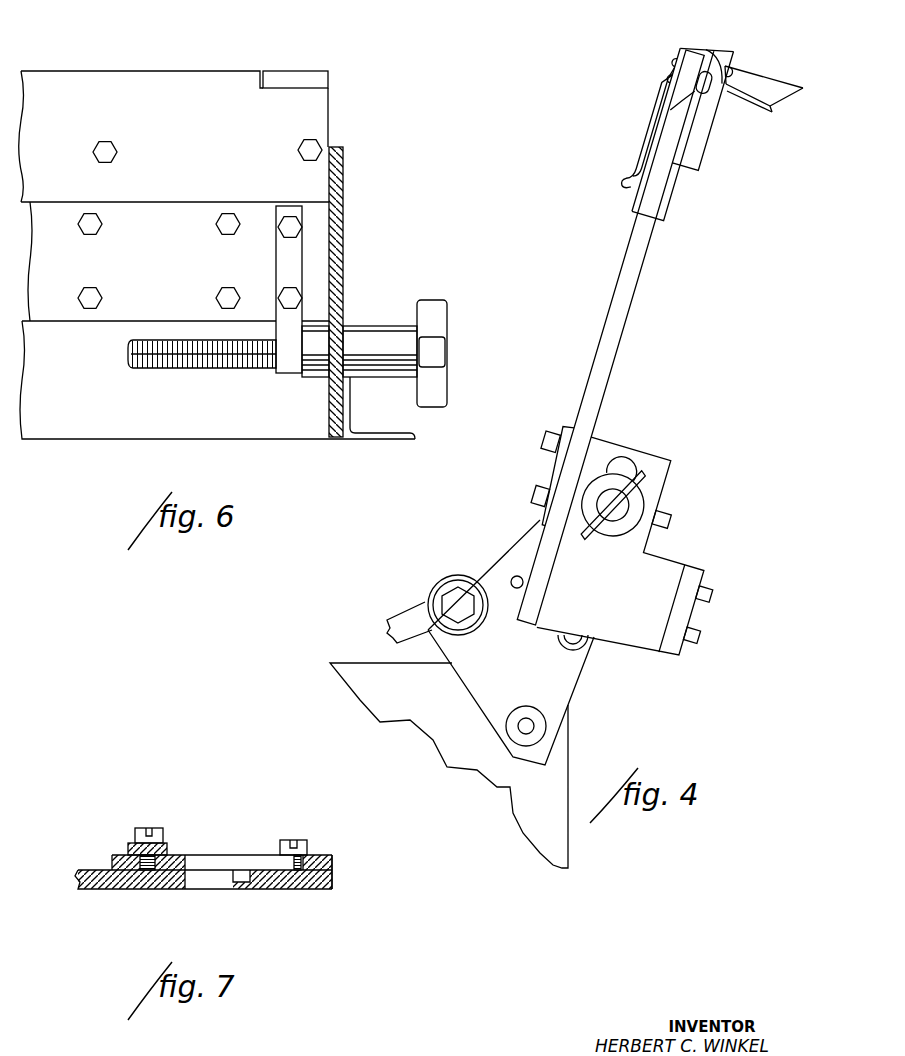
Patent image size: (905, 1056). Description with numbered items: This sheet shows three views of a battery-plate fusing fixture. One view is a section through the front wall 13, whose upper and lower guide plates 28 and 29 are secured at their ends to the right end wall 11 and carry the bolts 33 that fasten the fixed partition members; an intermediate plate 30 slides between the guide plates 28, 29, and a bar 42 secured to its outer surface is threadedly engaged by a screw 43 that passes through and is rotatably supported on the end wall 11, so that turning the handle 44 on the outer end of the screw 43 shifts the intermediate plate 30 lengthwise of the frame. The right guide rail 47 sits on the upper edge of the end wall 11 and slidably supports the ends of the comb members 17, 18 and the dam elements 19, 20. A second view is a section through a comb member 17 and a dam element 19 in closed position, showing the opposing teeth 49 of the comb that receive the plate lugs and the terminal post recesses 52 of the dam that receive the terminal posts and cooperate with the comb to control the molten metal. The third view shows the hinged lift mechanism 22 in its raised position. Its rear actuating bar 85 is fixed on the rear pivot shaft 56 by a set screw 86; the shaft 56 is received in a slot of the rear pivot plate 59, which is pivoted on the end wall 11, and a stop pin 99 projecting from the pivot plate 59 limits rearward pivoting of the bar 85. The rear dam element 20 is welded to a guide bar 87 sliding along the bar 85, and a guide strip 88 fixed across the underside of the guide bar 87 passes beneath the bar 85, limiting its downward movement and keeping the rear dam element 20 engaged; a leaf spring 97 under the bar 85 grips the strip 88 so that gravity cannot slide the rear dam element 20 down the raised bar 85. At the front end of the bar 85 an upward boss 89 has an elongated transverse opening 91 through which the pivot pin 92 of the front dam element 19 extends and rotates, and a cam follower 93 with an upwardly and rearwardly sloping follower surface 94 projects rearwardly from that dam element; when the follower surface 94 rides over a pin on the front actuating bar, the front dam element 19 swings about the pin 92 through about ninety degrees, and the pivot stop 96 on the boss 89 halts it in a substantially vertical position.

In FIG. 6, the right end wall 11 is at (343, 209).
In FIG. 4, the right end wall 11 is at (410, 718).
In FIG. 6, the front wall 13 is at (222, 150).
In FIG. 7, the comb member 17 is at (101, 890).
In FIG. 4, the comb member 18 is at (680, 160).
In FIG. 7, the front dam element 19 is at (333, 878).
In FIG. 4, the rear dam element 20 is at (755, 97).
In FIG. 4, the hinged lift mechanism 22 is at (601, 334).
In FIG. 6, the upper guide plate 28 is at (174, 115).
In FIG. 6, the lower guide plate 29 is at (97, 432).
In FIG. 6, the intermediate plate 30 is at (66, 312).
In FIG. 6, the bolts 33 is at (107, 147).
In FIG. 6, the bar 42 is at (288, 260).
In FIG. 6, the screw 43 is at (205, 367).
In FIG. 6, the handle 44 is at (358, 330).
In FIG. 6, the guide rail 47 is at (312, 77).
In FIG. 7, the teeth 49 is at (216, 881).
In FIG. 7, the terminal post recesses 52 is at (260, 858).
In FIG. 4, the rear pivot shaft 56 is at (618, 513).
In FIG. 4, the rear pivot plate 59 is at (570, 672).
In FIG. 4, the rear actuating bar 85 is at (612, 381).
In FIG. 4, the set screw 86 is at (672, 518).
In FIG. 4, the guide bar 87 is at (650, 200).
In FIG. 4, the guide strip 88 is at (653, 142).
In FIG. 4, the boss 89 is at (718, 53).
In FIG. 4, the opening 91 is at (690, 80).
In FIG. 4, the pivot pin 92 is at (698, 50).
In FIG. 4, the cam follower 93 is at (757, 77).
In FIG. 4, the cam follower surface 94 is at (787, 100).
In FIG. 4, the pivot stop 96 is at (728, 64).
In FIG. 4, the leaf spring 97 is at (655, 108).
In FIG. 4, the stop pin 99 is at (515, 578).